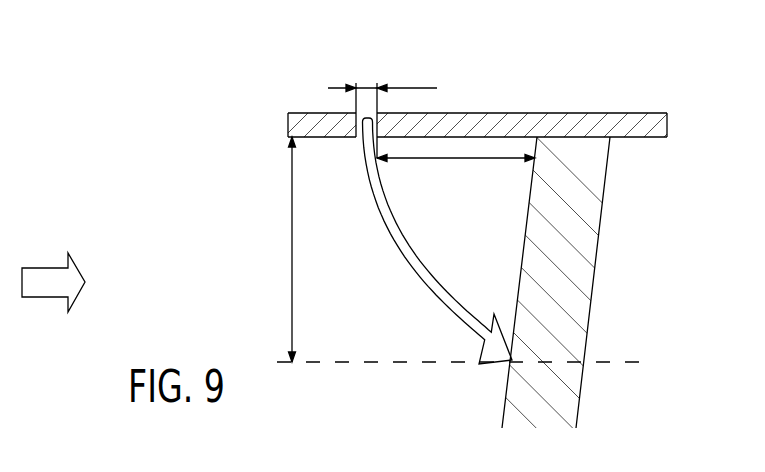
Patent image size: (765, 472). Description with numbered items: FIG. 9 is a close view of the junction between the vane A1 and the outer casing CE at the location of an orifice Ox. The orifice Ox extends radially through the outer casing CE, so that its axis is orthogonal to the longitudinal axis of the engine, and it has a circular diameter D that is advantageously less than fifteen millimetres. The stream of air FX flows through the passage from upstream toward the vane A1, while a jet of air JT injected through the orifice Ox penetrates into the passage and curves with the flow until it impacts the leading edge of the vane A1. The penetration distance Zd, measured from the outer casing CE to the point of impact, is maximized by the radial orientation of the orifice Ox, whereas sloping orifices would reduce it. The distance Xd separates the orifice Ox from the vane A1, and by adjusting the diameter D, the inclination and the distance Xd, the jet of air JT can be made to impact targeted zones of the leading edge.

The outer casing CE is at (529, 112).
The other orifice Ox is at (355, 112).
The diameter of the orifice D is at (382, 76).
The distance away from the vane Xd is at (456, 172).
The penetration distance Zd is at (461, 249).
The vane A1 is at (598, 238).
The jet of air JT is at (405, 267).
The stream of air FX is at (53, 277).